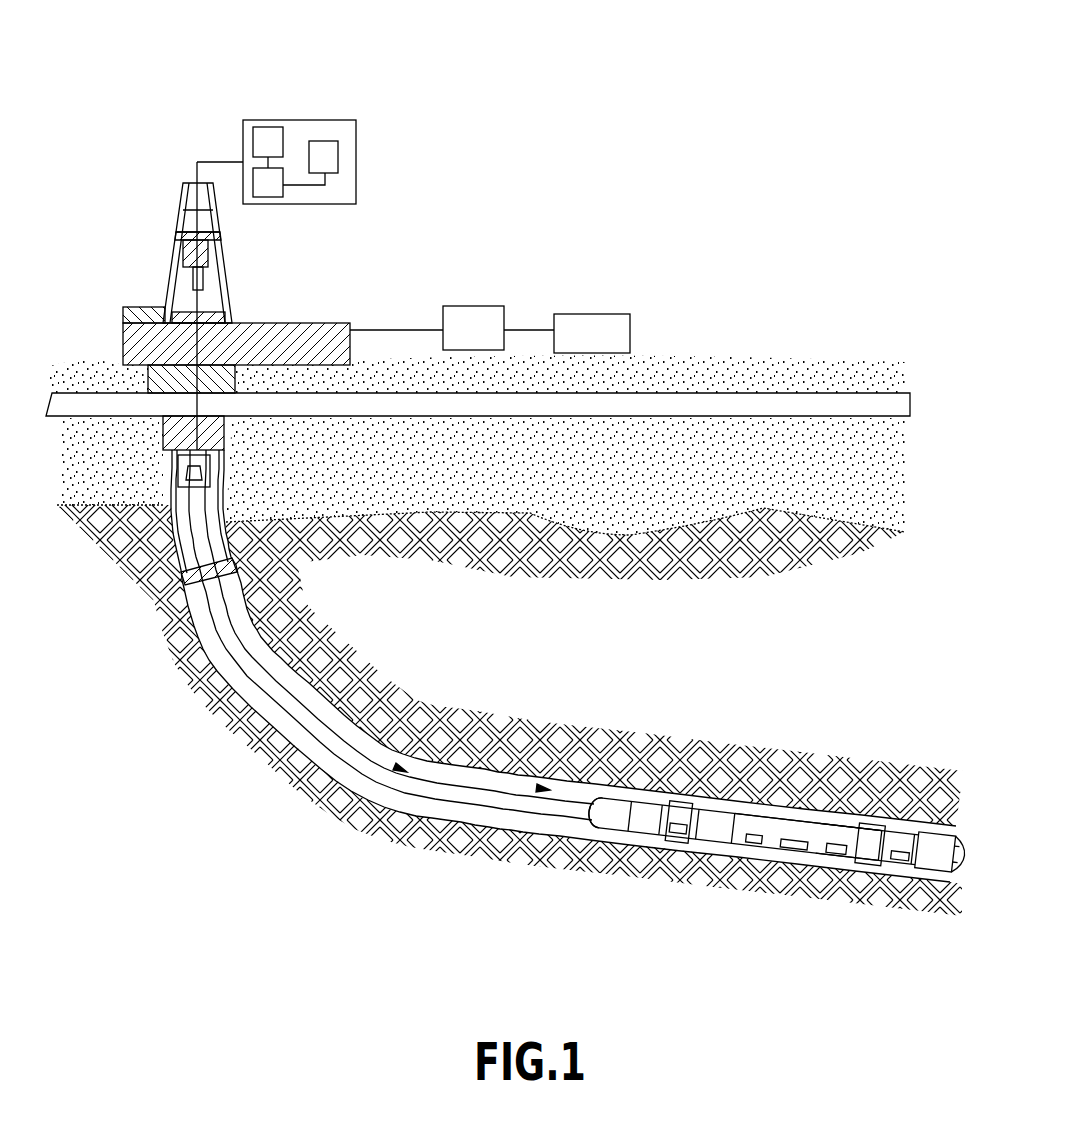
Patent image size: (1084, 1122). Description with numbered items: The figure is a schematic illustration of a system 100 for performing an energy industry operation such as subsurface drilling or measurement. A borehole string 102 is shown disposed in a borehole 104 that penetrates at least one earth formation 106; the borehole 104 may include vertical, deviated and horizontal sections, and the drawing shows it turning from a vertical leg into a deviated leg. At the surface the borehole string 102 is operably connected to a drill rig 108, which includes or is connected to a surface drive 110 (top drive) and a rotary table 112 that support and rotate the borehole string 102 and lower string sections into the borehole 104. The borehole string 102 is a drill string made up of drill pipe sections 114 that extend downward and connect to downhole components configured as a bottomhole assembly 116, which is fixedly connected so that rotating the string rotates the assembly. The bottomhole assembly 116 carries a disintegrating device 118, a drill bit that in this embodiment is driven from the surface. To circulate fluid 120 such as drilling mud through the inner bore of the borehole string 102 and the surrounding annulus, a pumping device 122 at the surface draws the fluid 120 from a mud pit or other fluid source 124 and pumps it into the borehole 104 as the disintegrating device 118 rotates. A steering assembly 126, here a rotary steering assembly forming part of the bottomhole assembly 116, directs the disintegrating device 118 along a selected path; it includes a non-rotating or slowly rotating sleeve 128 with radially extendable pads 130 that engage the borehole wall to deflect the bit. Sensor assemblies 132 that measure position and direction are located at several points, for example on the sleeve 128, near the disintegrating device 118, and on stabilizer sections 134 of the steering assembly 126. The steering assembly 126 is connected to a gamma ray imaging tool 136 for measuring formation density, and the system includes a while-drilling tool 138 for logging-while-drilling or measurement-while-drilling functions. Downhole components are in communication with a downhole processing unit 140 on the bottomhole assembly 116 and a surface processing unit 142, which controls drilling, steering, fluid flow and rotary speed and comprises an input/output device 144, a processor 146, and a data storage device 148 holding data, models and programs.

The system 100 is at (640, 192).
The borehole string 102 is at (276, 664).
The borehole 104 is at (195, 655).
The earth formation 106 is at (490, 740).
The drill rig 108 is at (140, 255).
The surface drive 110 is at (200, 257).
The rotary table 112 is at (220, 313).
The drill pipe sections 114 is at (510, 802).
The bottomhole assembly 116 is at (709, 790).
The disintegrating device 118 is at (920, 875).
The fluid 120 is at (388, 763).
The pumping device 122 is at (475, 318).
The fluid source 124 is at (617, 325).
The steering assembly 126 is at (847, 885).
The sleeve 128 is at (843, 803).
The radially extendable pads 130 is at (800, 820).
The sensor assemblies 132 is at (655, 840).
The stabilizer sections 134 is at (680, 800).
The gamma ray imaging tool 136 is at (638, 832).
The while-drilling tool 138 is at (600, 822).
The downhole processing unit 140 is at (720, 832).
The surface processing unit 142 is at (303, 98).
The input/output device 144 is at (283, 187).
The processor 146 is at (263, 127).
The data storage device 148 is at (338, 150).